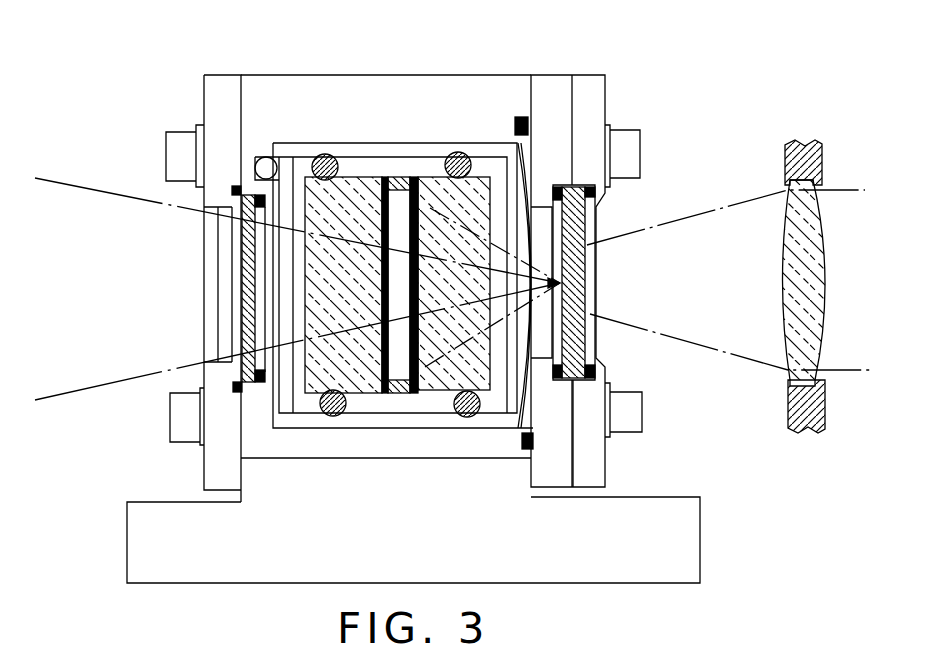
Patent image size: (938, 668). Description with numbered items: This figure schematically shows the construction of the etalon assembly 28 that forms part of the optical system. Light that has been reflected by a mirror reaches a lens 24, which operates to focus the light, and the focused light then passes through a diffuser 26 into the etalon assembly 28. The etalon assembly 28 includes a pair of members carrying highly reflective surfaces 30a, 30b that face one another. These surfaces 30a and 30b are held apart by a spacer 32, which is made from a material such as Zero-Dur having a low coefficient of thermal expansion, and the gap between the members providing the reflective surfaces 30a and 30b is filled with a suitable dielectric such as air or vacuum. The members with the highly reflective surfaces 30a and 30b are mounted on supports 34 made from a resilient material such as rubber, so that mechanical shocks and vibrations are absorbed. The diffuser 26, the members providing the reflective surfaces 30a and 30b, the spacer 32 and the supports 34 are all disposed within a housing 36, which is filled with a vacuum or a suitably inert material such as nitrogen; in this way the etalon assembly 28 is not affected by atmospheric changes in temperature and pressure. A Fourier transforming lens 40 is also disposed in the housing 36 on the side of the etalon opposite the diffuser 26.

The lens 24 is at (788, 237).
The diffuser 26 is at (578, 302).
The etalon assembly 28 is at (466, 66).
The highly reflective surface 30a is at (405, 395).
The highly reflective surface 30b is at (393, 203).
The spacer 32 is at (397, 395).
The supports 34 is at (458, 152).
The housing 36 is at (332, 76).
The Fourier transforming lens 40 is at (242, 288).